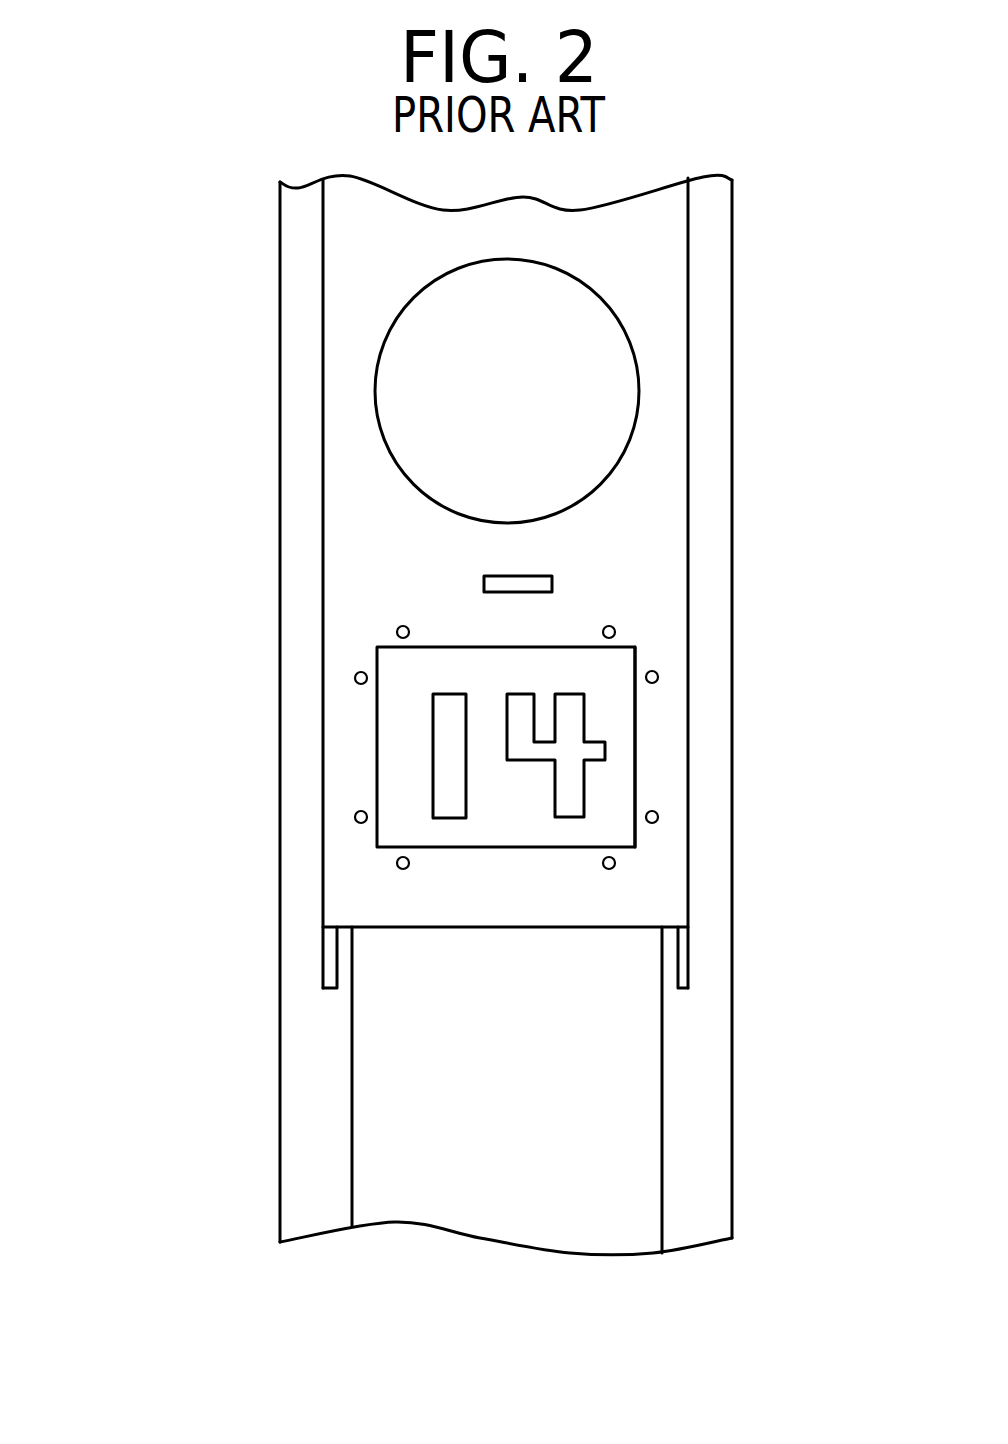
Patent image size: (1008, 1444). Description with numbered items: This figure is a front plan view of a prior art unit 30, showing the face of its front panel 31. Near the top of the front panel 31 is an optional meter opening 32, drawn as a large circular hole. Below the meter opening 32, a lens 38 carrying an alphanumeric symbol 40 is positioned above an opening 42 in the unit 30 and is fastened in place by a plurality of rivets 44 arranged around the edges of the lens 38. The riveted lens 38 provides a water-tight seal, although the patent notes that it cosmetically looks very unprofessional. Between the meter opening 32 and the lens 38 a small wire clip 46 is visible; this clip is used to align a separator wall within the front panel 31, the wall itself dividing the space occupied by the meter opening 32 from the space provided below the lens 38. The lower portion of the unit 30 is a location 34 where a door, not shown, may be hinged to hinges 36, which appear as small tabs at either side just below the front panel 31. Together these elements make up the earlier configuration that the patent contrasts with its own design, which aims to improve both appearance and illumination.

The unit 30 is at (152, 892).
The front panel 31 is at (367, 525).
The meter opening 32 is at (605, 367).
The location 34 is at (633, 1139).
The hinges 36 is at (683, 967).
The lens 38 is at (620, 712).
The alphanumeric symbol 40 is at (593, 753).
The opening 42 is at (635, 660).
The rivets 44 is at (617, 627).
The wire clip 46 is at (548, 585).